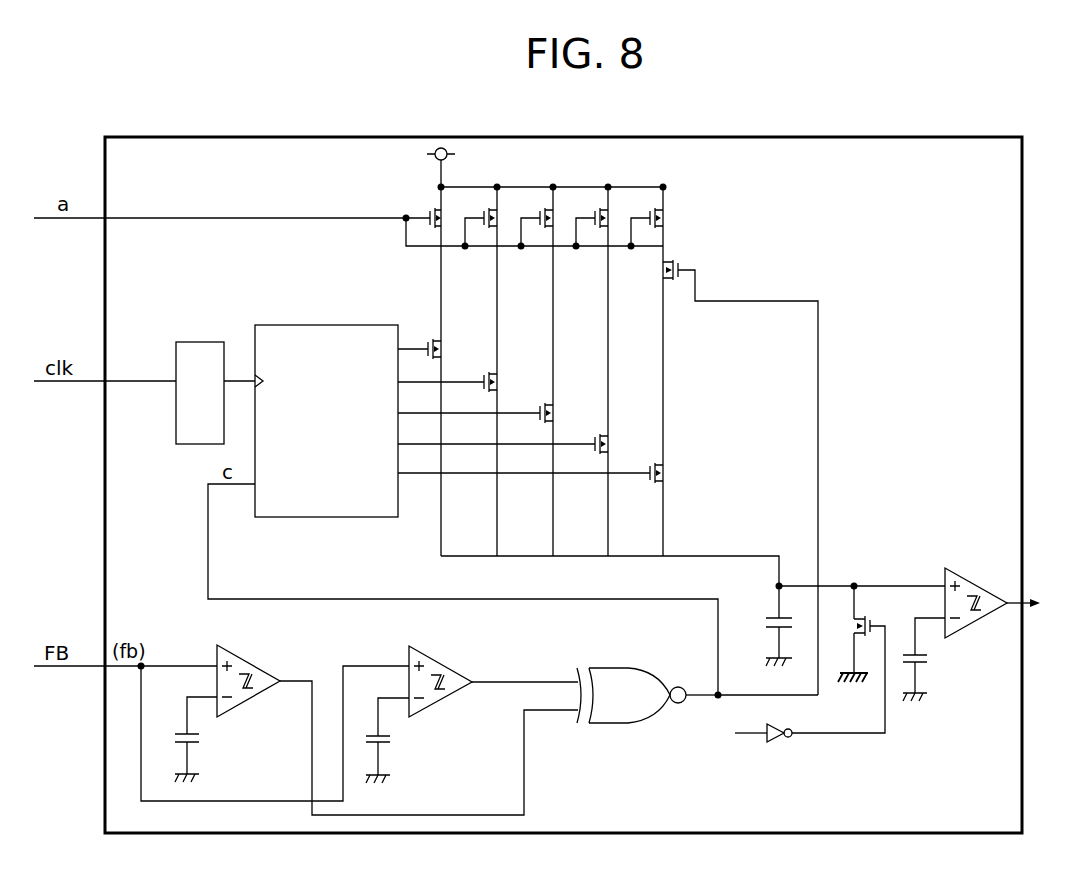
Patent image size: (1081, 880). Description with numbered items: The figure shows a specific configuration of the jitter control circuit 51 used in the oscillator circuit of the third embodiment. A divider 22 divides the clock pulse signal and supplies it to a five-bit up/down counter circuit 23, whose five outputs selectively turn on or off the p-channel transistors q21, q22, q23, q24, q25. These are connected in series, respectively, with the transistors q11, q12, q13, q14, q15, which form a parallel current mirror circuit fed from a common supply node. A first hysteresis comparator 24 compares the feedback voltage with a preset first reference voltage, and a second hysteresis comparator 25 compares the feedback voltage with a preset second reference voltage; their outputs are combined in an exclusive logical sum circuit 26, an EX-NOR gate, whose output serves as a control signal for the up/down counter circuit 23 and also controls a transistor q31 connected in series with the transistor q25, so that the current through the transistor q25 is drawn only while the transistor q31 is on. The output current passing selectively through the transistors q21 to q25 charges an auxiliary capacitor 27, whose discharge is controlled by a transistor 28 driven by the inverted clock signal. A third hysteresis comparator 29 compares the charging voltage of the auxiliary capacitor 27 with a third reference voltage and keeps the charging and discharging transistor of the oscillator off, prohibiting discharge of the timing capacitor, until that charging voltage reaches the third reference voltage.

The divider 22 is at (204, 342).
The up/down counter circuit 23 is at (306, 336).
The first hysteresis comparator 24 is at (262, 692).
The second hysteresis comparator 25 is at (437, 698).
The exclusive logical sum circuit 26 is at (638, 678).
The auxiliary capacitor 27 is at (762, 620).
The transistor 28 is at (866, 612).
The third hysteresis comparator 29 is at (984, 610).
The jitter control circuit 51 is at (896, 258).
The transistor q11 is at (418, 196).
The transistor q12 is at (490, 192).
The transistor q13 is at (546, 192).
The transistor q14 is at (601, 192).
The transistor q15 is at (657, 192).
The transistor q21 is at (445, 350).
The transistor q22 is at (471, 383).
The transistor q23 is at (499, 414).
The transistor q24 is at (526, 445).
The transistor q25 is at (554, 474).
The transistor q31 is at (687, 305).